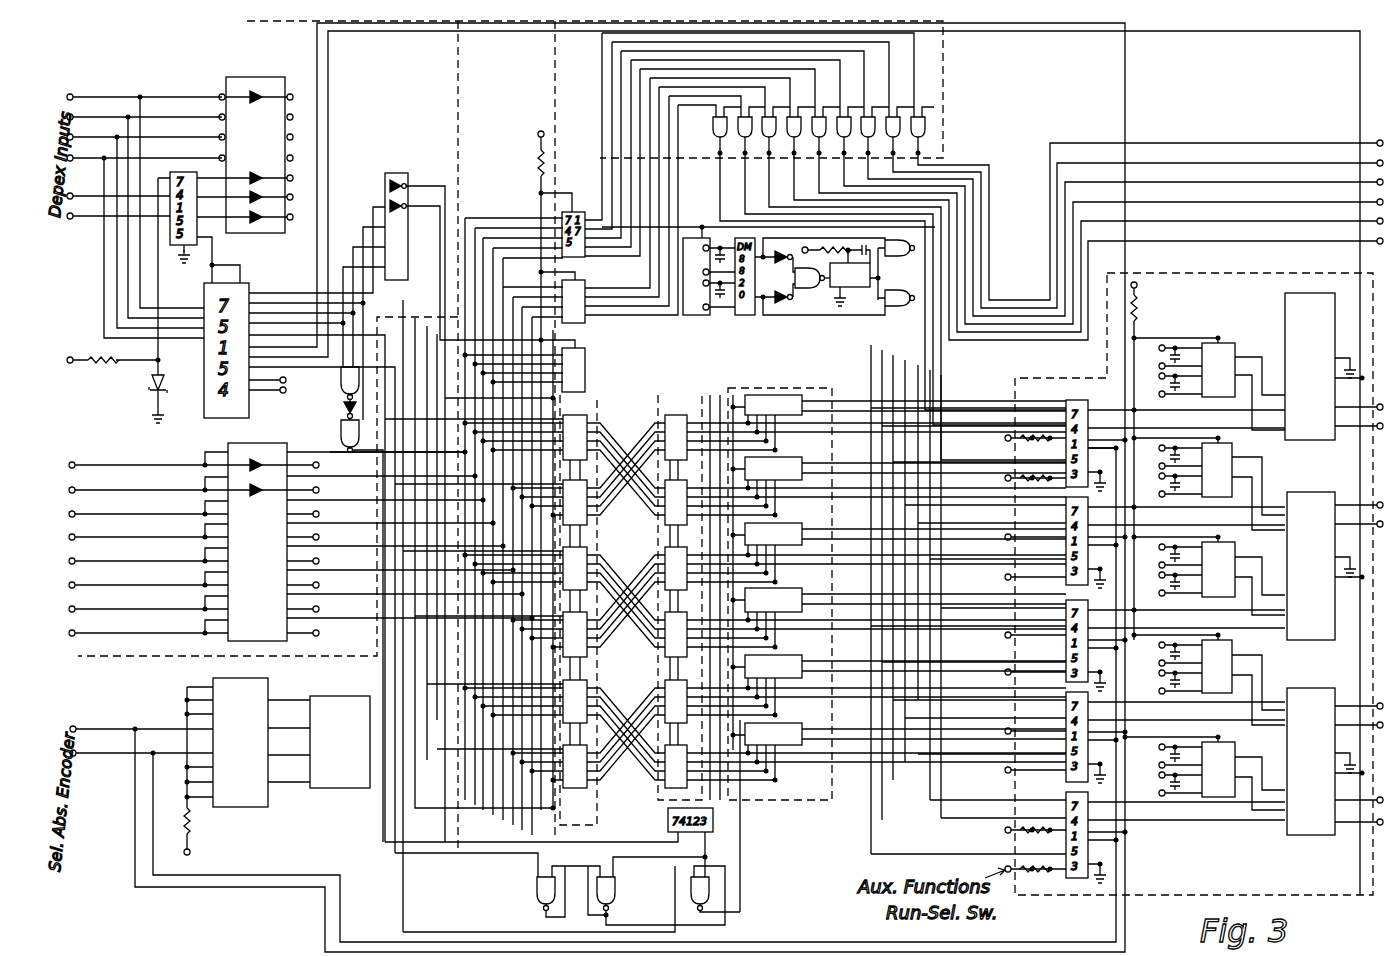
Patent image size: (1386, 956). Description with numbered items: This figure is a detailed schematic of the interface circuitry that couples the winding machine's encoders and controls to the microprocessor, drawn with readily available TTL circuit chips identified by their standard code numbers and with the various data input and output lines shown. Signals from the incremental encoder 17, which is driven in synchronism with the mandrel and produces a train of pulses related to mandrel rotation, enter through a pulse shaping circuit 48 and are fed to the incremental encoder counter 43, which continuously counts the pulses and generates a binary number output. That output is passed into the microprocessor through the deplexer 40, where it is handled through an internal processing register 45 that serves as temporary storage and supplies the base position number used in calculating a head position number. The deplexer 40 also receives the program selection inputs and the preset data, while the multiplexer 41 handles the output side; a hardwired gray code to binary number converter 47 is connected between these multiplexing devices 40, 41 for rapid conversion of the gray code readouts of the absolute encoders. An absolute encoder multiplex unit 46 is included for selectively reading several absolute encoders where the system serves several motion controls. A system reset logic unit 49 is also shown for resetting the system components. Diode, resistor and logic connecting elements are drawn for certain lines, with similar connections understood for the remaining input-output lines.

The incremental encoder 17 is at (683, 312).
The deplexer 40 is at (150, 663).
The multiplexer 41 is at (1292, 880).
The incremental encoder counter 43 is at (798, 790).
The processing registers 45 is at (664, 801).
The absolute encoder multiplex unit 46 is at (317, 801).
The gray code to binary number converter 47 is at (946, 85).
The pulse shaping circuit 48 is at (822, 307).
The system reset logic unit 49 is at (654, 919).